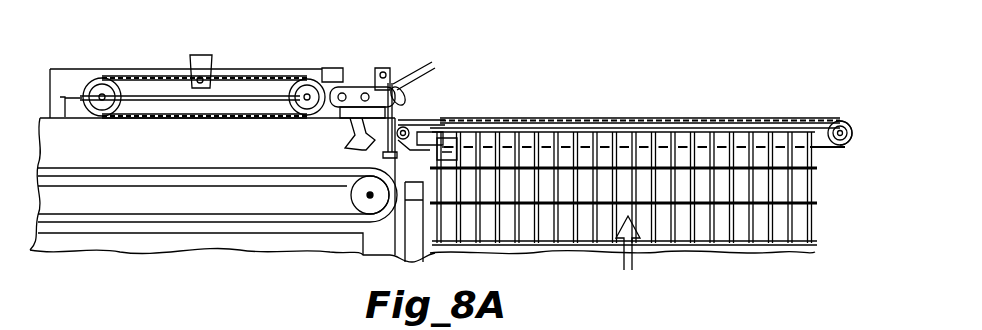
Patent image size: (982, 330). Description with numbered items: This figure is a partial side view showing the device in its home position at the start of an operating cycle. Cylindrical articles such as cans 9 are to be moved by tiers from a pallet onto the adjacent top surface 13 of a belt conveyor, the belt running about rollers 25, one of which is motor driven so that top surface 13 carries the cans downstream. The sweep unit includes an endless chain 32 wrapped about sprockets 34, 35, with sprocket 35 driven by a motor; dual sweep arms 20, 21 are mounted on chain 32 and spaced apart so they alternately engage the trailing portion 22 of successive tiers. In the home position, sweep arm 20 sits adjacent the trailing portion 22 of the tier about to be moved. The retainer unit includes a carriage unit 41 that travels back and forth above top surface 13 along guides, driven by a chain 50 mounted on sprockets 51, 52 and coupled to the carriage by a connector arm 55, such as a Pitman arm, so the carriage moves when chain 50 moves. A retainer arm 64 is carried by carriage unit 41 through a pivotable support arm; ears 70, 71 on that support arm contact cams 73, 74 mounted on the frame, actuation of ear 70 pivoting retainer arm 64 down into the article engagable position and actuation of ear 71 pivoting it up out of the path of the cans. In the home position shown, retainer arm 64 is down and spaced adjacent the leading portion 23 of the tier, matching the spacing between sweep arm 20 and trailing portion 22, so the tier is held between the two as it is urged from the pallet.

The cans 9 is at (660, 138).
The top surface 13 is at (187, 170).
The sweep arm 20 is at (845, 147).
The sweep arm 21 is at (325, 118).
The trailing portion 22 is at (805, 156).
The leading portion 23 is at (428, 138).
The rollers 25 is at (355, 195).
The endless chain 32 is at (604, 120).
The sprocket 34 is at (433, 130).
The sprocket 35 is at (835, 122).
The carriage unit 41 is at (357, 90).
The chain 50 is at (168, 44).
The sprocket 51 is at (284, 78).
The sprocket 52 is at (93, 80).
The connector arm 55 is at (322, 76).
The retainer arm 64 is at (388, 155).
The ear 70 is at (372, 78).
The ear 71 is at (448, 80).
The cam 73 is at (207, 77).
The cam 74 is at (397, 77).